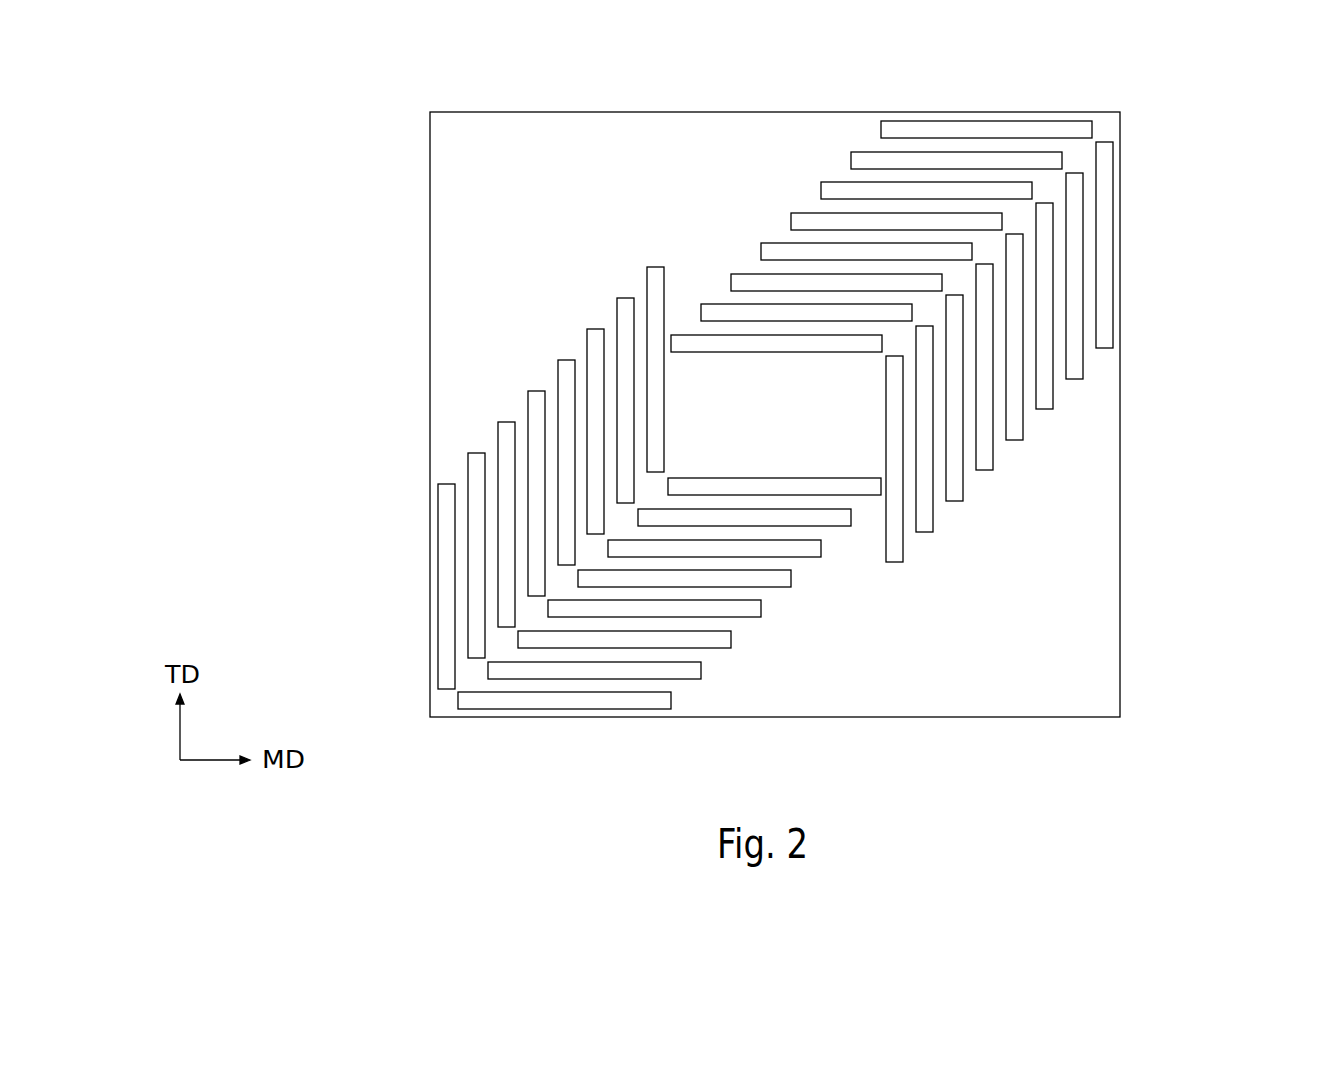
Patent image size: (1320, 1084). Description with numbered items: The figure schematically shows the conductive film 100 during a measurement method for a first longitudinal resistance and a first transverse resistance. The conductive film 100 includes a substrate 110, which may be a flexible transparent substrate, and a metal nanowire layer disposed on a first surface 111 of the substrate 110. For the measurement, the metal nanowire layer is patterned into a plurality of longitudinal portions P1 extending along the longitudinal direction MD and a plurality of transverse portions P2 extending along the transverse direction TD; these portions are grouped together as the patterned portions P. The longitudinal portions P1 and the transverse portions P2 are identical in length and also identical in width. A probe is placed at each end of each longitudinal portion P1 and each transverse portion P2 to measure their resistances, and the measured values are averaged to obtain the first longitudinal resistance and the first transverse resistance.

The conductive film 100 is at (323, 54).
The substrate 110 is at (866, 414).
The first surface 111 is at (1107, 637).
The protrusions P is at (1217, 42).
The longitudinal portions P1 is at (1062, 130).
The transverse portions P2 is at (1105, 160).